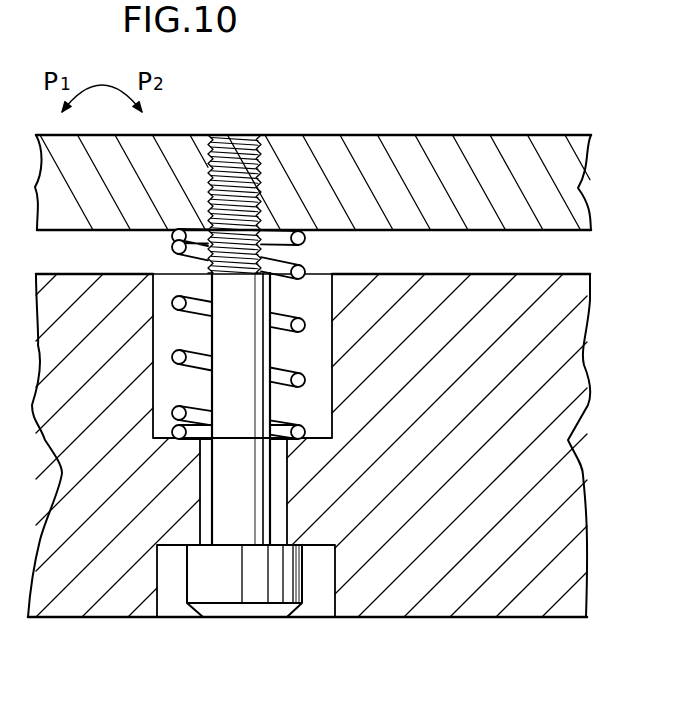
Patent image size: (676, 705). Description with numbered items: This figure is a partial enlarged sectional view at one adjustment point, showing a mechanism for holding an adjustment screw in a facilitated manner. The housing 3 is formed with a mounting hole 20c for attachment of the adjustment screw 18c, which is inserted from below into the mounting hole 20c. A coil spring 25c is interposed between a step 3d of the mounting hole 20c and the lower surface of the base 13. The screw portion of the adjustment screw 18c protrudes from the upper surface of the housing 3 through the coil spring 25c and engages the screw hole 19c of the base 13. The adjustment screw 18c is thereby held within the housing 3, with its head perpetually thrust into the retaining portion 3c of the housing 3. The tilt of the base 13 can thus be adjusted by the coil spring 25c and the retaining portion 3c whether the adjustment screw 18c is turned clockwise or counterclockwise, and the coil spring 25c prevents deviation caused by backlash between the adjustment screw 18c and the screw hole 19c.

The housing 3 is at (565, 372).
The retaining portion 3c is at (292, 543).
The step 3d is at (177, 440).
The base 13 is at (468, 140).
The adjustment screw 18c is at (225, 583).
The screw hole 19c is at (231, 136).
The mounting hole 20c is at (161, 303).
The coil spring 25c is at (222, 260).